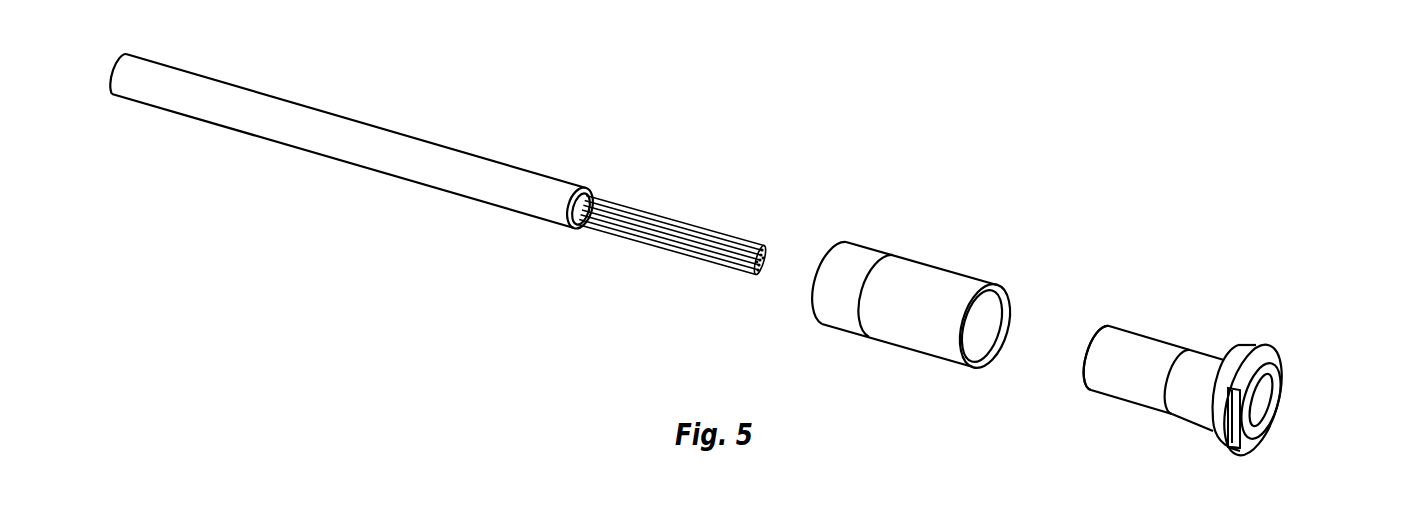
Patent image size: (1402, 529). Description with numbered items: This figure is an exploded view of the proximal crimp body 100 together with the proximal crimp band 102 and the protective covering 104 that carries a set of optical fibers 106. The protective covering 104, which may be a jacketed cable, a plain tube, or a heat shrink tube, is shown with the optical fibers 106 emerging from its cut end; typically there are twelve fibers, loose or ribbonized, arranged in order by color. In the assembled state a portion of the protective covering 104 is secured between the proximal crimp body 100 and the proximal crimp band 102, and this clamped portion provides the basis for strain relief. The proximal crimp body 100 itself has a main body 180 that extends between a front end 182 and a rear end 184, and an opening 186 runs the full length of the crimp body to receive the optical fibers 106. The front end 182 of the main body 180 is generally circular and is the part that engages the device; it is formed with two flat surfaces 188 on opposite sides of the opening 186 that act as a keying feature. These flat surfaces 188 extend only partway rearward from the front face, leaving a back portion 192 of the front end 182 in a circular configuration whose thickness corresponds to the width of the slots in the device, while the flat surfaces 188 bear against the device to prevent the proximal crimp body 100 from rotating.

The proximal crimp body 100 is at (1290, 315).
The proximal crimp band 102 is at (877, 247).
The protective covering 104 is at (517, 162).
The optical fibers 106 is at (707, 228).
The main body 180 is at (1163, 300).
The front end 182 is at (1288, 382).
The rear end 184 is at (1083, 392).
The opening 186 is at (1267, 407).
The flat surfaces 188 is at (1237, 435).
The back portion 192 is at (1213, 435).